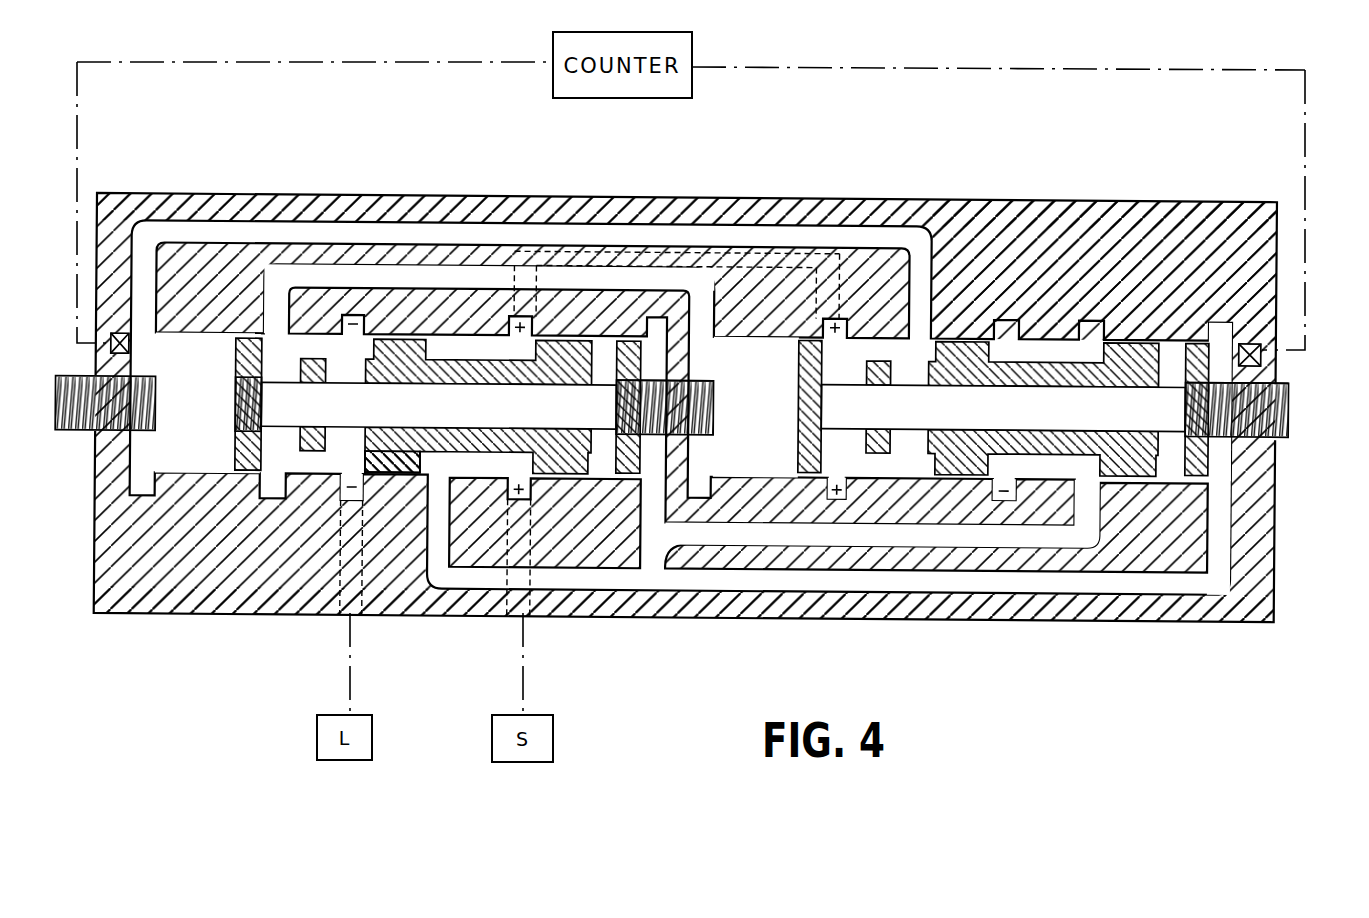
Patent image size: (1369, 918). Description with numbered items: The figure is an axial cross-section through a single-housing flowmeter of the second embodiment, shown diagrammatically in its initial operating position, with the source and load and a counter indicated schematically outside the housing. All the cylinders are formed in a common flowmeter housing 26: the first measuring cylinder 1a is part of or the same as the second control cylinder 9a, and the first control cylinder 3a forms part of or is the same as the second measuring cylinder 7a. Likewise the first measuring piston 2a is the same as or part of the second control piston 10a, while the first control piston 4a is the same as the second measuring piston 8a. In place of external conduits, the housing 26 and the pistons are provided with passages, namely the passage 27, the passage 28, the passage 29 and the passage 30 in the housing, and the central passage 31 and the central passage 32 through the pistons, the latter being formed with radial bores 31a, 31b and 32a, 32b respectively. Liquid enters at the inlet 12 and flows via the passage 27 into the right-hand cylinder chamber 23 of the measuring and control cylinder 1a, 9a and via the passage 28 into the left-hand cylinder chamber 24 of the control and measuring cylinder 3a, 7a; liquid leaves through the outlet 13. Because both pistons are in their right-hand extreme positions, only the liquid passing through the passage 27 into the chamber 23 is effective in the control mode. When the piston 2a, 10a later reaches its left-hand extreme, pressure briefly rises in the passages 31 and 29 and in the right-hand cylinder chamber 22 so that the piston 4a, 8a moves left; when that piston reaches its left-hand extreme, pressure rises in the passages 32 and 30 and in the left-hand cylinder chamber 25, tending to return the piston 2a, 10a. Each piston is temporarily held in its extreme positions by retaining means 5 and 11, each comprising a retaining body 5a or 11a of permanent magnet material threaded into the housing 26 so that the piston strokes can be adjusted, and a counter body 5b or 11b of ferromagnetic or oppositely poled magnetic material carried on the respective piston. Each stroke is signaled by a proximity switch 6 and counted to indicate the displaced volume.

The first measuring cylinder 1a is at (686, 378).
The second control cylinder 9a is at (1125, 329).
The first measuring piston 2a is at (1197, 455).
The first control cylinder 3a is at (406, 546).
The second measuring cylinder 7a is at (385, 462).
The first control piston 4a is at (387, 452).
The retaining means 5 is at (245, 412).
The retaining body 5a is at (143, 377).
The counter body 5b is at (240, 372).
The proximity switch 6 is at (126, 335).
The second measuring piston 8a is at (250, 455).
The second control piston 10a is at (1137, 458).
The retaining means 11 is at (1222, 426).
The retaining body 11a is at (713, 378).
The counter body 11b is at (798, 380).
The inlet 12 is at (520, 495).
The outlet 13 is at (343, 500).
The right-hand cylinder chamber 22 is at (657, 327).
The right-hand cylinder chamber 23 is at (1225, 308).
The left-hand cylinder chamber 24 is at (208, 402).
The left-hand cylinder chamber 25 is at (756, 407).
The flowmeter housing 26 is at (612, 208).
The passage 27 is at (705, 578).
The passage 28 is at (455, 230).
The passage 29 is at (942, 530).
The passage 30 is at (325, 281).
The central passage 31 is at (1003, 408).
The radial bore 31a is at (908, 377).
The radial bore 31b is at (1170, 377).
The central passage 32 is at (438, 405).
The radial bore 32a is at (300, 372).
The radial bore 32b is at (603, 367).